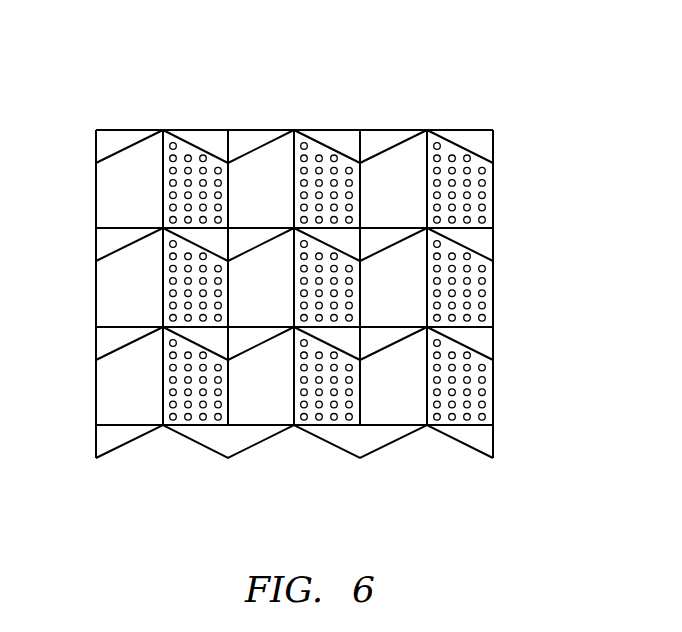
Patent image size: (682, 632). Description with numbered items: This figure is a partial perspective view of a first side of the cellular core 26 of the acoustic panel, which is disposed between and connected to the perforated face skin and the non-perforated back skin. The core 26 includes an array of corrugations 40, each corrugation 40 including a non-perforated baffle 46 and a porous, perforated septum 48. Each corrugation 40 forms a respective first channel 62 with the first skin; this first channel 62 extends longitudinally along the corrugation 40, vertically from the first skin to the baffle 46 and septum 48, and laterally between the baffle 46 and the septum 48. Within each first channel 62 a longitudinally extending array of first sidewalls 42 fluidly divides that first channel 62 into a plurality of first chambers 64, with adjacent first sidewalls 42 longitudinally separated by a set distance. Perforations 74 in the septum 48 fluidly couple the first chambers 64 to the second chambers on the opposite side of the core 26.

The cellular core 26 is at (520, 80).
The corrugation 40 is at (162, 458).
The first sidewall 42 is at (485, 142).
The non-perforated baffle 46 is at (135, 157).
The septum 48 is at (192, 147).
The first channel 62 is at (240, 178).
The first chamber 64 is at (246, 293).
The perforations 74 is at (485, 379).